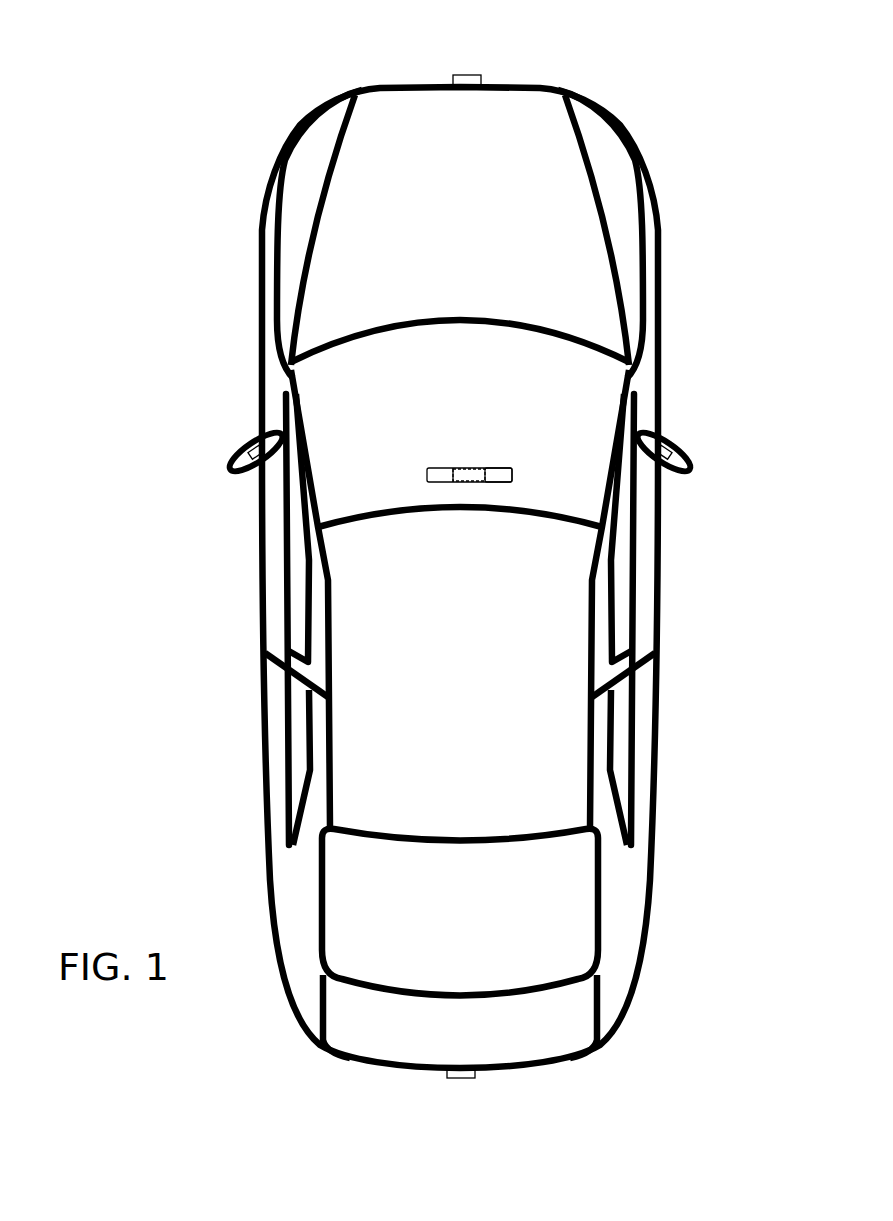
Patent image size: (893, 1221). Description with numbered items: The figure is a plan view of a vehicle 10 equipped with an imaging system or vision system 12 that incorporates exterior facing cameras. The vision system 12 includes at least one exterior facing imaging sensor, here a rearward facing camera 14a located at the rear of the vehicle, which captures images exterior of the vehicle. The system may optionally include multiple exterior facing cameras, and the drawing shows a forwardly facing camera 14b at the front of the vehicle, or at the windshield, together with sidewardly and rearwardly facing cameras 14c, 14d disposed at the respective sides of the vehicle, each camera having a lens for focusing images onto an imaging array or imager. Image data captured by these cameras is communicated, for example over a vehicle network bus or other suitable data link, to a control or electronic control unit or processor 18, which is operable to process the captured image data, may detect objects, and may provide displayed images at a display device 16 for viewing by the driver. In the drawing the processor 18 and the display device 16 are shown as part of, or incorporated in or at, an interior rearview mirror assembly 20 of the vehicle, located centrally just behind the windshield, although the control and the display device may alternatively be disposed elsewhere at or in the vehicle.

The vehicle 10 is at (202, 172).
The vision system 12 is at (398, 1106).
The rearward facing camera 14a is at (467, 1077).
The forwardly facing camera 14b is at (469, 75).
The sidewardly/rearwardly facing camera 14c is at (247, 446).
The sidewardly/rearwardly facing camera 14d is at (673, 446).
The display device 16 is at (442, 469).
The electronic control unit 18 is at (467, 468).
The interior rearview mirror assembly 20 is at (512, 468).